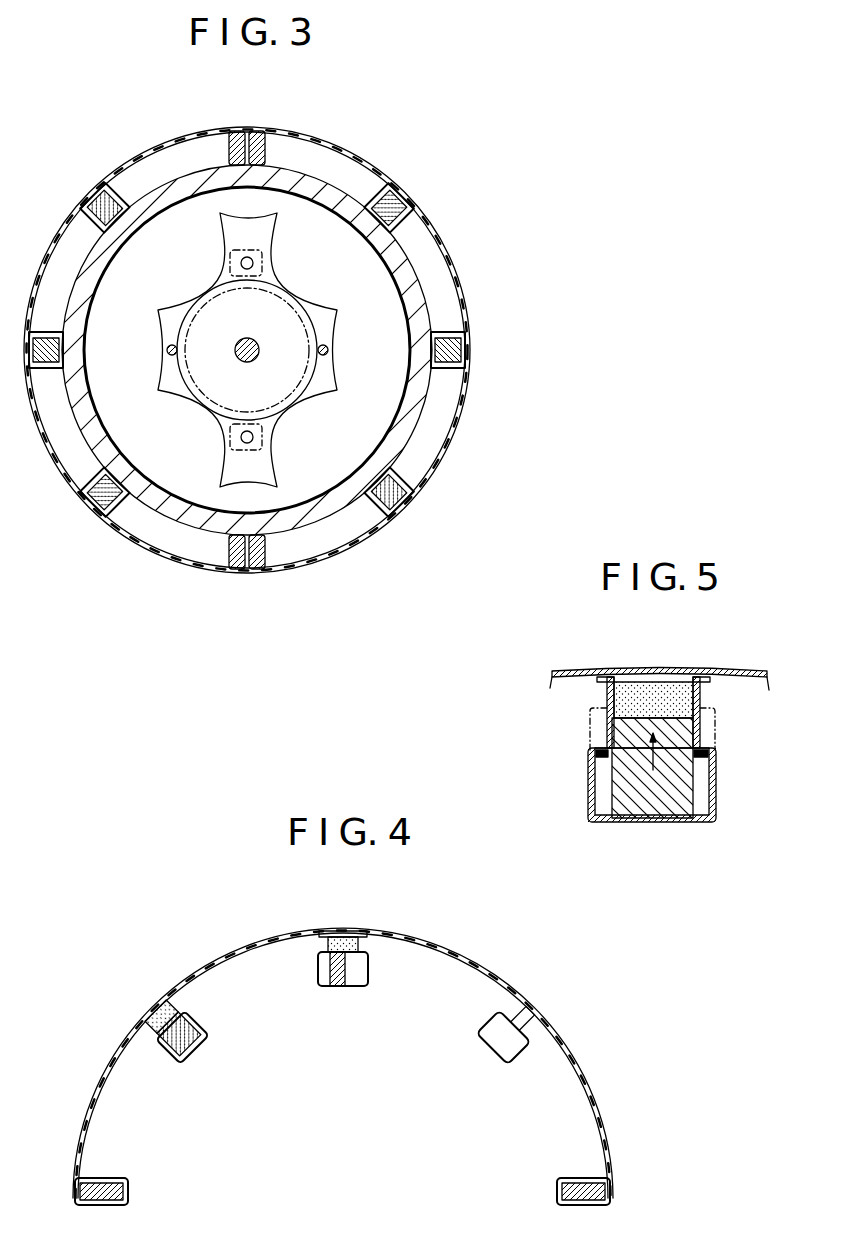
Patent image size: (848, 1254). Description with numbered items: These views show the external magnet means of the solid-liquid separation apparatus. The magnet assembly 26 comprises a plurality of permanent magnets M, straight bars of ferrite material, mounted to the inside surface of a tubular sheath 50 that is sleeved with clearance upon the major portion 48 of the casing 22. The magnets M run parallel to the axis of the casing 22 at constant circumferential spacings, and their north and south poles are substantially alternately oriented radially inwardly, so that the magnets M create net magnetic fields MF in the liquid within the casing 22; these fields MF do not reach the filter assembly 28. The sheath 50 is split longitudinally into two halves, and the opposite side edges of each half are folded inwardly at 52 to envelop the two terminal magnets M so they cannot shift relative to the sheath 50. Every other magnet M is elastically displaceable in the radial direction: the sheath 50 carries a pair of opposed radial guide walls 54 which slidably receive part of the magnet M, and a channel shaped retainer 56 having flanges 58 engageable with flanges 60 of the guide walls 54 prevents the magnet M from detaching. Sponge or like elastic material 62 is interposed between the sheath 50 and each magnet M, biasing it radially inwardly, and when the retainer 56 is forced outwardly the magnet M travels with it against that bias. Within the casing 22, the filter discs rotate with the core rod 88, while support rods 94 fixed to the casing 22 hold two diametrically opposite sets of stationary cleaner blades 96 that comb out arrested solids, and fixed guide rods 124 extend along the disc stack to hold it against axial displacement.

In FIG. 3, the casing 22 is at (424, 350).
In FIG. 3, the magnet assembly 26 is at (421, 513).
In FIG. 5, the magnet assembly 26 is at (593, 670).
In FIG. 4, the magnet assembly 26 is at (596, 1080).
In FIG. 3, the filter assembly 28 is at (204, 412).
In FIG. 3, the major portion of the casing 48 is at (398, 290).
In FIG. 3, the tubular sheath 50 is at (266, 350).
In FIG. 5, the tubular sheath 50 is at (659, 660).
In FIG. 4, the tubular sheath 50 is at (361, 1057).
In FIG. 3, the inwardly folded side edges of sheath half 52 is at (234, 131).
In FIG. 4, the inwardly folded side edges of sheath half 52 is at (116, 1180).
In FIG. 3, the radial guide walls 54 is at (80, 207).
In FIG. 5, the radial guide walls 54 is at (606, 700).
In FIG. 4, the radial guide walls 54 is at (190, 1021).
In FIG. 3, the channel shaped retainer 56 is at (88, 207).
In FIG. 5, the channel shaped retainer 56 is at (651, 766).
In FIG. 4, the channel shaped retainer 56 is at (186, 1005).
In FIG. 5, the flanges of retainer 58 is at (596, 754).
In FIG. 5, the flanges of guide walls 60 is at (717, 783).
In FIG. 3, the elastic material 62 is at (86, 496).
In FIG. 5, the elastic material 62 is at (680, 692).
In FIG. 4, the elastic material 62 is at (344, 938).
In FIG. 3, the core rod 88 is at (252, 343).
In FIG. 3, the support rods 94 is at (238, 257).
In FIG. 3, the cleaner blades 96 is at (256, 263).
In FIG. 3, the guide rods 124 is at (167, 350).
In FIG. 3, the permanent magnets M is at (254, 351).
In FIG. 5, the permanent magnets M is at (654, 805).
In FIG. 4, the permanent magnets M is at (342, 1047).
In FIG. 3, the net magnetic fields MF is at (200, 282).